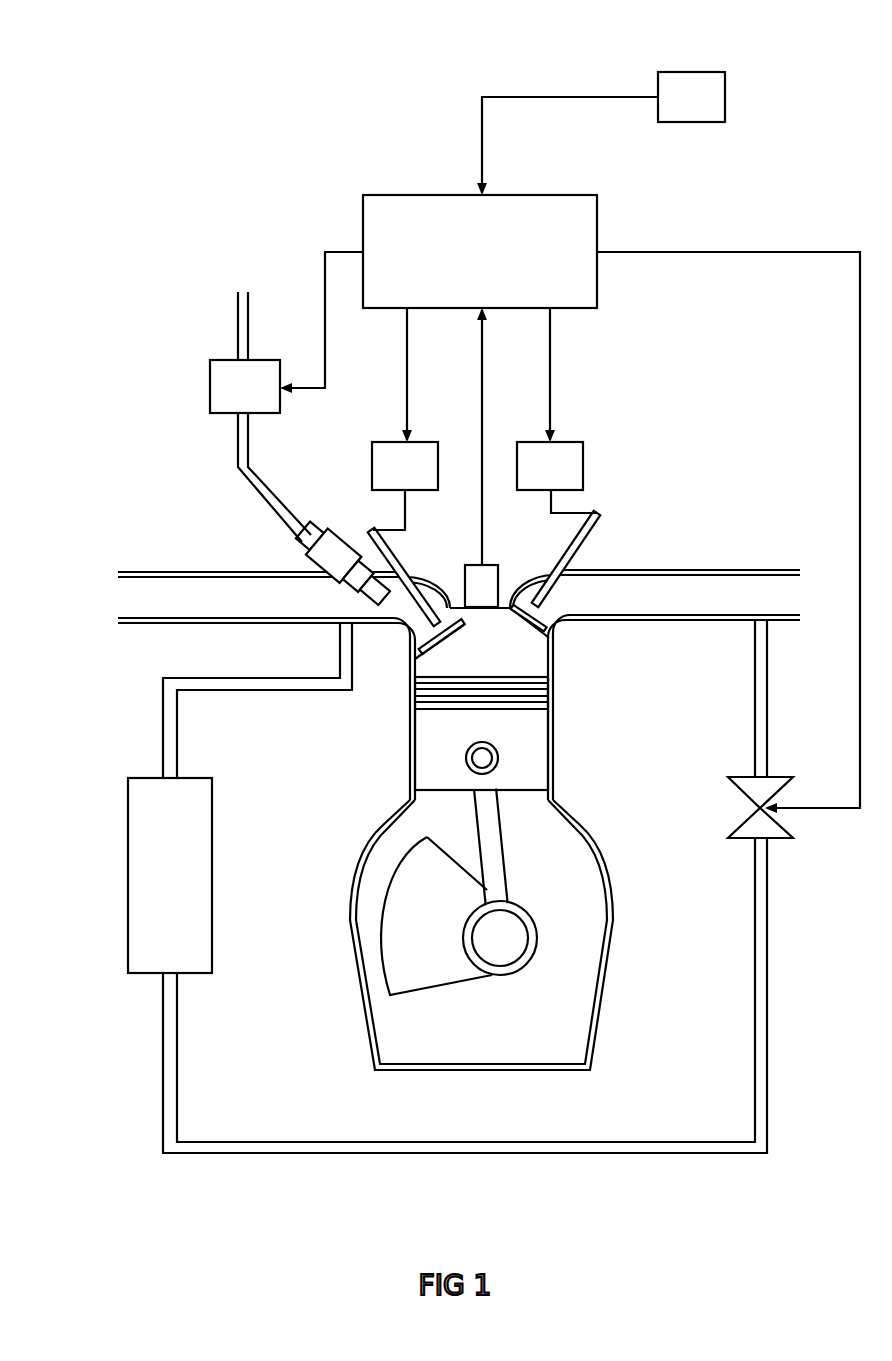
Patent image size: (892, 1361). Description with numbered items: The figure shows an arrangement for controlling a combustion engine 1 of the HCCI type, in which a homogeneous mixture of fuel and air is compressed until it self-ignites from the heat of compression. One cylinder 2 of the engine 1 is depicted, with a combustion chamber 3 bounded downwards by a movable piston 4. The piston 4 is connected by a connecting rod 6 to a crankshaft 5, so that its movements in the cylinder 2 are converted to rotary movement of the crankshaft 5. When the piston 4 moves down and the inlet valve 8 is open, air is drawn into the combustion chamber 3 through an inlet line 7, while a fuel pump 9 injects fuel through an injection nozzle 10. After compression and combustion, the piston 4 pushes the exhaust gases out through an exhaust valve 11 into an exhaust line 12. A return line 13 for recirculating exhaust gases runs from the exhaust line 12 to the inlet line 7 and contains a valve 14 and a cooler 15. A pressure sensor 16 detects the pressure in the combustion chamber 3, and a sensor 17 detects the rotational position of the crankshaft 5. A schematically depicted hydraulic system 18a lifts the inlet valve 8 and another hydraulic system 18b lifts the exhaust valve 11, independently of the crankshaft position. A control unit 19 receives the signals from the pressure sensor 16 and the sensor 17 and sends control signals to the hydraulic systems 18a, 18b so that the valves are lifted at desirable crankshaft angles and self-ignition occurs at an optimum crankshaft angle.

The combustion engine 1 is at (570, 730).
The cylinder 2 is at (555, 658).
The combustion chamber 3 is at (470, 656).
The piston 4 is at (480, 723).
The crankshaft 5 is at (432, 950).
The connecting rod 6 is at (493, 842).
The inlet line 7 is at (227, 578).
The inlet valve 8 is at (410, 580).
The fuel pump 9 is at (223, 373).
The injection nozzle 10 is at (333, 553).
The exhaust valve 11 is at (553, 573).
The exhaust line 12 is at (690, 590).
The return line 13 is at (765, 1008).
The valve 14 is at (760, 790).
The cooler 15 is at (165, 885).
The pressure sensor 16 is at (485, 582).
The sensor 17 is at (705, 95).
The hydraulic system 18a is at (397, 460).
The hydraulic system 18b is at (565, 467).
The control unit 19 is at (463, 268).